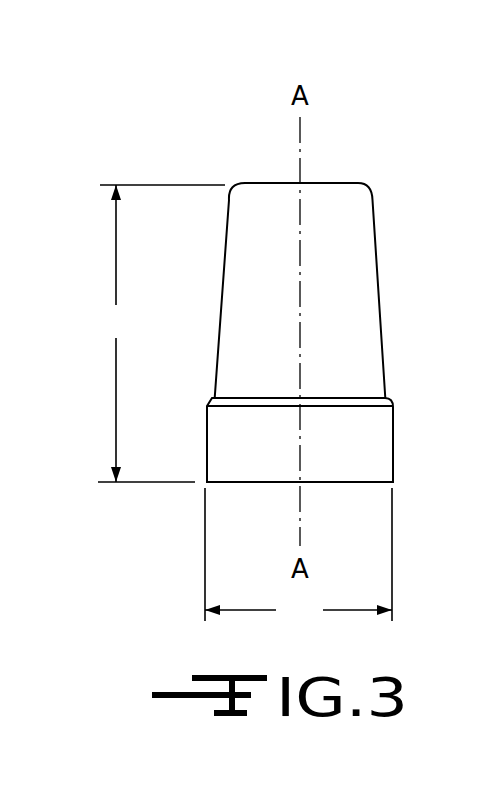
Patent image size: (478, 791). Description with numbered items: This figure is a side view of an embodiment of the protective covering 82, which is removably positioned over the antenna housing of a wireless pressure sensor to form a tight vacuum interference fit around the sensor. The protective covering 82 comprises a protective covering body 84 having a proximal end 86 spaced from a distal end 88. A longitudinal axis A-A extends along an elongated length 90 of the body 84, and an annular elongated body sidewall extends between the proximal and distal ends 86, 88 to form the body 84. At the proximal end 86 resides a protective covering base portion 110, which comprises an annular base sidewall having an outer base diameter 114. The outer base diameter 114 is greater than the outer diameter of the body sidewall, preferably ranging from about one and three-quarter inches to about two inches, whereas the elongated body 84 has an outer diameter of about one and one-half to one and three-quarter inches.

The protective covering 82 is at (223, 157).
The protective covering body 84 is at (359, 318).
The proximal end 86 is at (259, 453).
The distal end 88 is at (327, 192).
The elongated length 90 is at (160, 333).
The protective covering base portion 110 is at (383, 439).
The outer base diameter 114 is at (298, 557).